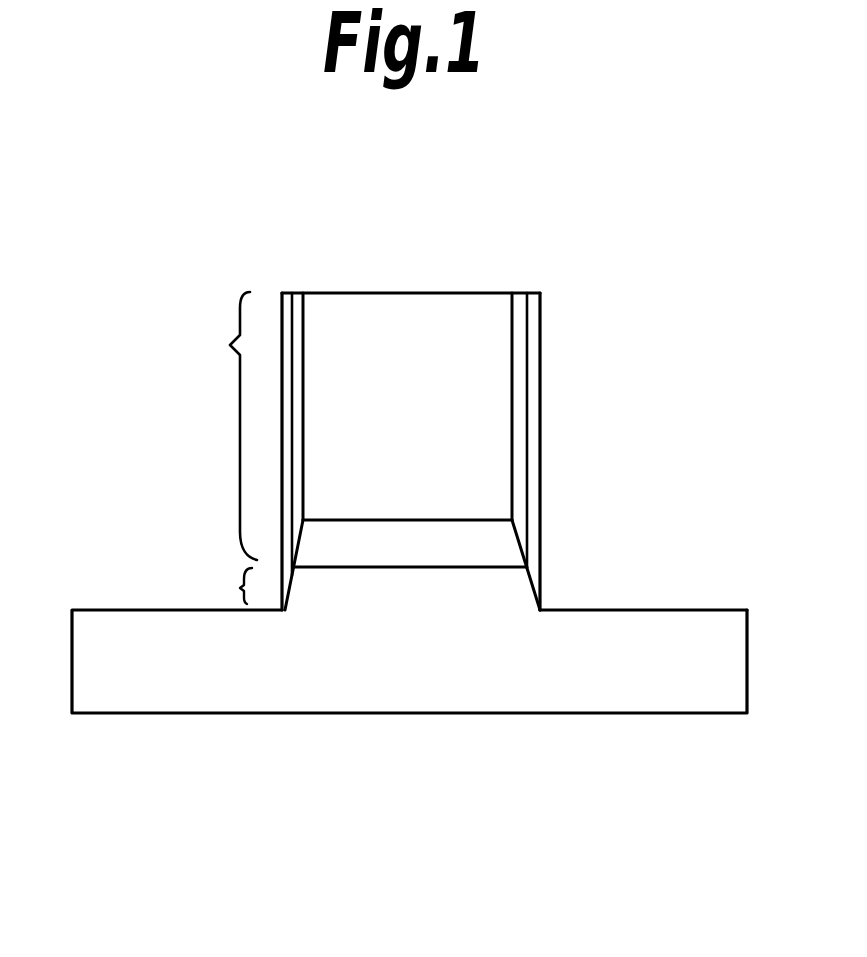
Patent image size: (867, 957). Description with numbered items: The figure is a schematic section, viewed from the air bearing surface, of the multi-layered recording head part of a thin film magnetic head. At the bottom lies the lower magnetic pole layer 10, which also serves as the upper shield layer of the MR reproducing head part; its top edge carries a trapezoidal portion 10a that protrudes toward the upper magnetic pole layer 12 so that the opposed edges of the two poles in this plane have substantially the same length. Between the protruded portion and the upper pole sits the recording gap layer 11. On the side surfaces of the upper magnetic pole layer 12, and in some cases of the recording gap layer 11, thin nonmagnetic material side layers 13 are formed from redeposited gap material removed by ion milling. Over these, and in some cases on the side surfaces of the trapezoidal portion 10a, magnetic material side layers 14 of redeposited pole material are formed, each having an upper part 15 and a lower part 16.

The lower magnetic pole layer 10 is at (668, 680).
The trapezoidal portion 10a is at (483, 615).
The recording gap layer 11 is at (353, 553).
The upper magnetic pole layer 12 is at (318, 400).
The nonmagnetic material side layers 13 is at (517, 438).
The magnetic material side layers 14 is at (503, 520).
The upper part 15 is at (228, 344).
The lower part 16 is at (225, 592).